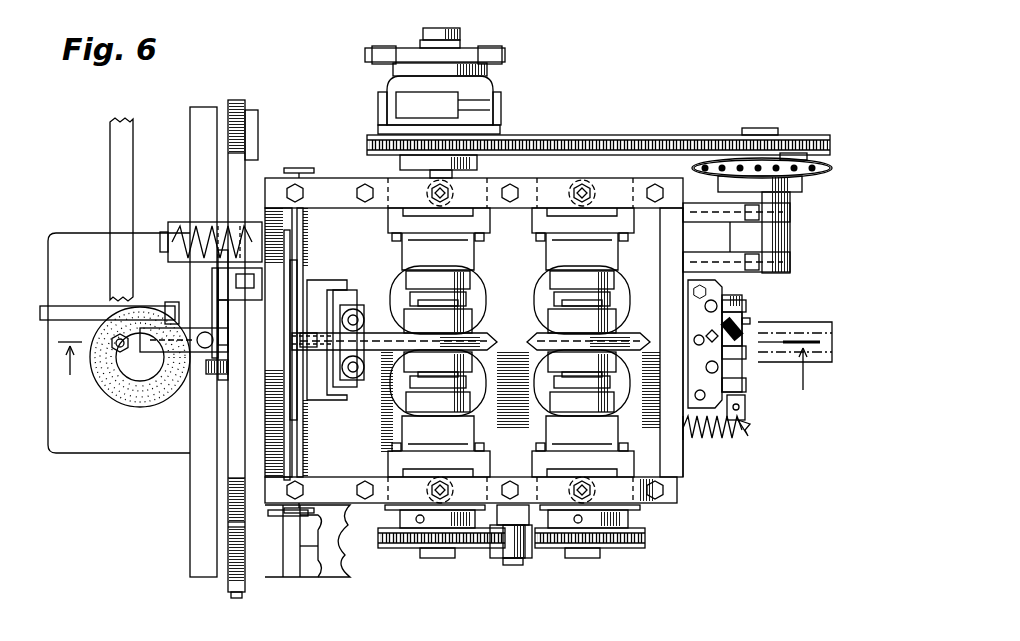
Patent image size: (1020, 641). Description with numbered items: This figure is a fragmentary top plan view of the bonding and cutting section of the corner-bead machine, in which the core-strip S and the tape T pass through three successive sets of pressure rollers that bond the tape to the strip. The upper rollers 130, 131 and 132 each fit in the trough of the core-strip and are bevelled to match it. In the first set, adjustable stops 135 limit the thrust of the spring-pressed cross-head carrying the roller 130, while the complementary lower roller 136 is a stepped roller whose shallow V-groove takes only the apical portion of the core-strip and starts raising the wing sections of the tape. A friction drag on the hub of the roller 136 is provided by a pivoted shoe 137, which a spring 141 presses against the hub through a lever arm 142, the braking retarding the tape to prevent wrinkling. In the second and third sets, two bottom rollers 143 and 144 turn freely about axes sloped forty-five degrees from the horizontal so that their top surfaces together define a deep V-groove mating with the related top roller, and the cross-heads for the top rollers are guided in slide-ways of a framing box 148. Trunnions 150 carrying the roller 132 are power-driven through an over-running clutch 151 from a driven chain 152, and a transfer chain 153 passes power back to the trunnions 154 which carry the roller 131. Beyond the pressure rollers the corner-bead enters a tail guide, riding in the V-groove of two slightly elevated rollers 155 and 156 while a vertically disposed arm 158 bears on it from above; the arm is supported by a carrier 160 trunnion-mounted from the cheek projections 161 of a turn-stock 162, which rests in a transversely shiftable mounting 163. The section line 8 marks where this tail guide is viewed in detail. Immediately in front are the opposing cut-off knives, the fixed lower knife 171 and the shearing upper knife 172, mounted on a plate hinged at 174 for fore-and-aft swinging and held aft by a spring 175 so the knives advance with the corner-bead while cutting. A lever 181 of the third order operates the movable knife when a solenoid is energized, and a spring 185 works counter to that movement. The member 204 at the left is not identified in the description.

The section line 8 is at (432, 379).
The upper roller 130 is at (742, 336).
The upper roller 131 is at (627, 340).
The upper roller 132 is at (491, 340).
The adjustable stops 135 is at (704, 344).
The lower roller 136 is at (744, 320).
The pivoted shoe 137 is at (746, 392).
The spring 141 is at (718, 438).
The lever arm 142 is at (735, 426).
The bottom roller 143 is at (538, 398).
The bottom roller 144 is at (538, 297).
The framing box 148 is at (683, 491).
The trunnions 150 is at (440, 550).
The over-running clutch 151 is at (378, 108).
The driven chain 152 is at (556, 136).
The transfer chain 153 is at (628, 546).
The trunnions 154 is at (590, 552).
The elevated roller 155 is at (362, 382).
The elevated roller 156 is at (362, 310).
The vertically disposed arm 158 is at (335, 285).
The carrier 160 is at (348, 400).
The cheek projections 161 is at (312, 283).
The turn-stock 162 is at (294, 430).
The mounting 163 is at (288, 445).
The lower knife 171 is at (222, 366).
The upper knife 172 is at (218, 392).
The hinge 174 is at (234, 598).
The spring 175 is at (180, 228).
The lever 181 is at (183, 345).
The spring 185 is at (120, 355).
The lever arm 204 is at (78, 318).
The core-strip S is at (782, 357).
The tape T is at (804, 320).